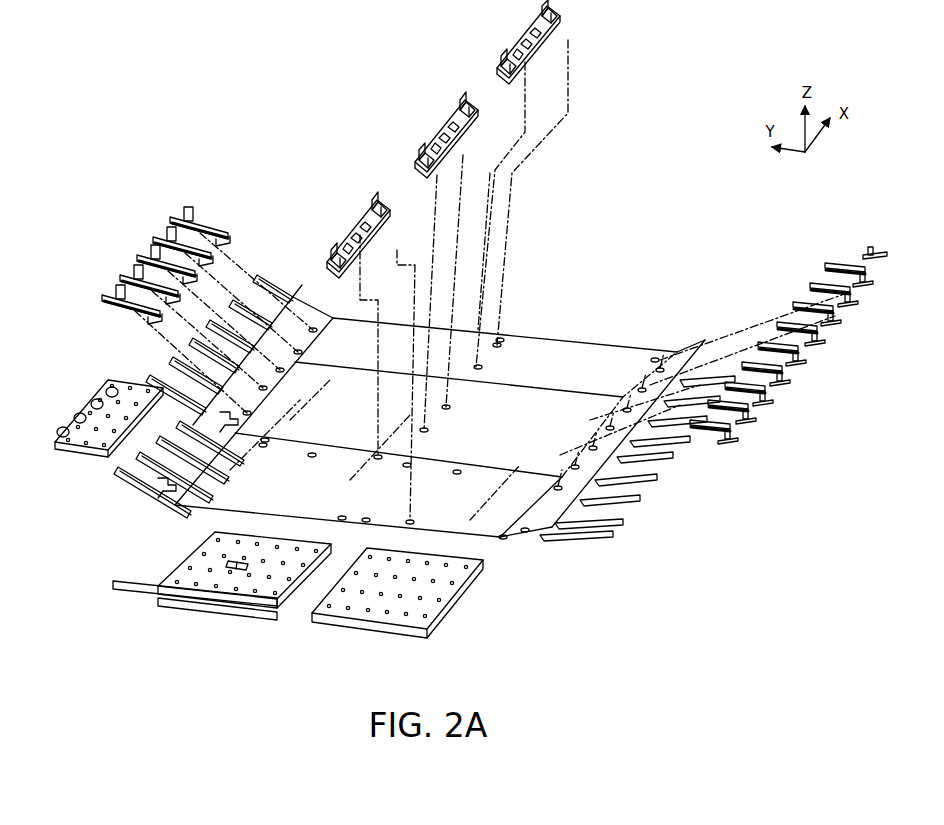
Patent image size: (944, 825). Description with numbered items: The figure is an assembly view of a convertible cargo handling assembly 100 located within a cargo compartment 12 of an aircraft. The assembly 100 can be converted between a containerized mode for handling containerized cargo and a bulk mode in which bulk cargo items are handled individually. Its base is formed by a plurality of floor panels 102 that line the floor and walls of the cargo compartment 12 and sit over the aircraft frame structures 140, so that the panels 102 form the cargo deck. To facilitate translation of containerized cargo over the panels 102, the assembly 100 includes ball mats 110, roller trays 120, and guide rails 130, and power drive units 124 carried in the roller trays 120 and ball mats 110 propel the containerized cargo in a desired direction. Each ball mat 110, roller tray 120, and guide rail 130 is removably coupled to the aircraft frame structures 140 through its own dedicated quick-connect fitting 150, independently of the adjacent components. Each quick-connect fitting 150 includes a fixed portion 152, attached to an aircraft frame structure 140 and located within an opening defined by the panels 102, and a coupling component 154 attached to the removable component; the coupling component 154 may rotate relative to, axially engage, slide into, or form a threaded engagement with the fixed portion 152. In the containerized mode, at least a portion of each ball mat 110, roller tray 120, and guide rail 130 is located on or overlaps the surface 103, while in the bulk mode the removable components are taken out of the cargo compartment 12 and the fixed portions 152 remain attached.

The cargo compartment 12 is at (148, 156).
The convertible cargo handling assembly 100 is at (282, 148).
The panels 102 is at (346, 390).
The surface 103 is at (453, 430).
The ball mats 110 is at (70, 449).
The roller trays 120 is at (430, 148).
The power drive units 124 is at (228, 563).
The guide rails 130 is at (205, 212).
The aircraft frame structures 140 is at (265, 270).
The quick-connect fitting 150 is at (562, 575).
The fixed portion 152 is at (265, 436).
The coupling component 154 is at (128, 317).